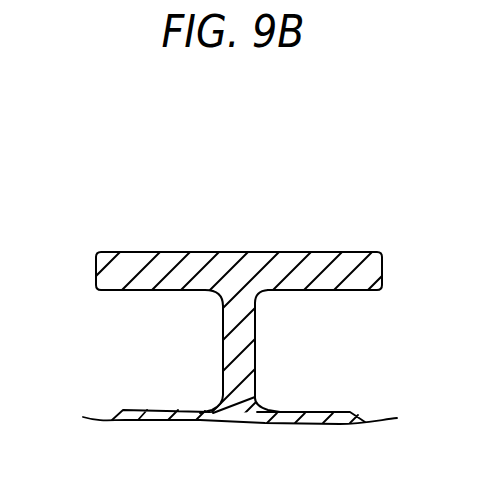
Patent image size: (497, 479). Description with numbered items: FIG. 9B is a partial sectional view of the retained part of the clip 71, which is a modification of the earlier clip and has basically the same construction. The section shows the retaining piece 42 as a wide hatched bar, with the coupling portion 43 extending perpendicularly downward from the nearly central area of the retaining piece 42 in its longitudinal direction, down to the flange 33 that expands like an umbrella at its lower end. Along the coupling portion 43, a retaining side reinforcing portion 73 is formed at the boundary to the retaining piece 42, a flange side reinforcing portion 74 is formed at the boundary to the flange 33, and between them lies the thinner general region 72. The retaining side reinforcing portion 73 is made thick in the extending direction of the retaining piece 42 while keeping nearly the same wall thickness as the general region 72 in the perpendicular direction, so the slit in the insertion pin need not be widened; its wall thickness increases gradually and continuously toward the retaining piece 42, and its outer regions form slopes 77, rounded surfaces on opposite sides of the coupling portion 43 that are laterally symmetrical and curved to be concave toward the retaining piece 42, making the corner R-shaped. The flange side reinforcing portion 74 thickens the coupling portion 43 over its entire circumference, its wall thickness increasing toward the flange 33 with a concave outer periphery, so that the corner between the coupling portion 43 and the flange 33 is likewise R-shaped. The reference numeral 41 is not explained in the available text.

The terminal 41 is at (98, 189).
The clip 71 is at (209, 271).
The retaining piece 42 is at (210, 252).
The slopes 77 is at (213, 297).
The flange 33 is at (165, 411).
The coupling portion 43 is at (382, 310).
The retaining side reinforcing portion 73 is at (265, 296).
The general region 72 is at (257, 348).
The flange side reinforcing portion 74 is at (258, 400).